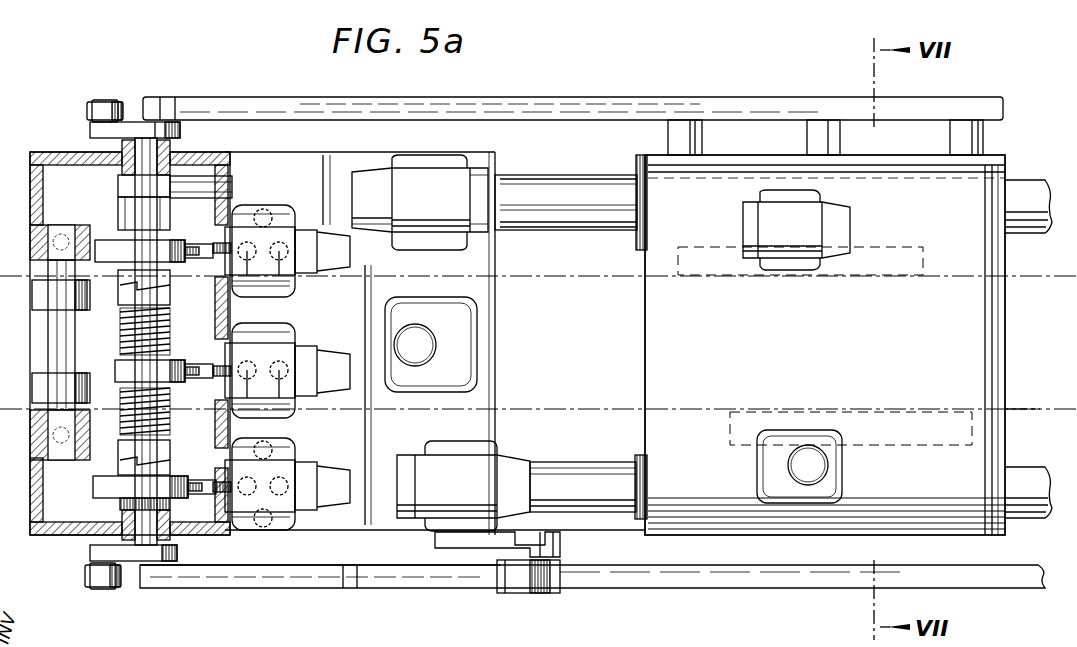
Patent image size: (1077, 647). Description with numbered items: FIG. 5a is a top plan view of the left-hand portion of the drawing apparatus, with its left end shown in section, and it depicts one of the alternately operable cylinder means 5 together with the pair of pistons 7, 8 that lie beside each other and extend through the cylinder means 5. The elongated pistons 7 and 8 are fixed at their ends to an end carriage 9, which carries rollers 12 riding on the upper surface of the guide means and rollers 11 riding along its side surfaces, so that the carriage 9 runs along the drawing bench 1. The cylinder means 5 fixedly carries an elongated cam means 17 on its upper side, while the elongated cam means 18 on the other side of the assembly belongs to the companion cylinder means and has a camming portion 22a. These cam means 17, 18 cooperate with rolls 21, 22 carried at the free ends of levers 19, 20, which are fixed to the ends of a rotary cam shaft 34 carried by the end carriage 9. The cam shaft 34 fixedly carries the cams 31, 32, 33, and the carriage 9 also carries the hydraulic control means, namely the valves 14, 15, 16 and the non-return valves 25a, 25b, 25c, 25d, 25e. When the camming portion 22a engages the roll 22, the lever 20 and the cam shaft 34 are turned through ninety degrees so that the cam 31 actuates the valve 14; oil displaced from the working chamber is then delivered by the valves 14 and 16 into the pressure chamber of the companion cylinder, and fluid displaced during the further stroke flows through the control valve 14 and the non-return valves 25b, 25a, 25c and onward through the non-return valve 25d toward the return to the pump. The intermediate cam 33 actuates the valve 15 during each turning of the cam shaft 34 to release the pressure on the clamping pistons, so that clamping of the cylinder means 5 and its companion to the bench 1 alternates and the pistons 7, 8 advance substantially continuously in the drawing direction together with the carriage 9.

The drawing bench 1 is at (1022, 420).
The cylinder means 5 is at (985, 322).
The piston 7 is at (1025, 190).
The piston 8 is at (1022, 518).
The end carriage 9 is at (65, 170).
The rollers 11 is at (34, 433).
The rollers 12 is at (40, 375).
The valve 14 is at (283, 536).
The valve 15 is at (290, 420).
The valve 16 is at (290, 292).
The elongated cam means 17 is at (558, 106).
The elongated cam means 18 is at (707, 580).
The lever 19 is at (130, 122).
The lever 20 is at (130, 561).
The roll 21 is at (87, 106).
The roll 22 is at (85, 575).
The camming portion 22a is at (233, 578).
The non-return valve 25a is at (437, 178).
The non-return valve 25b is at (453, 392).
The non-return valve 25c is at (512, 466).
The non-return valve 25d is at (760, 228).
The non-return valve 25e is at (762, 470).
The cam 31 is at (93, 488).
The cam 32 is at (108, 252).
The intermediate cam 33 is at (175, 360).
The cam shaft 34 is at (168, 468).